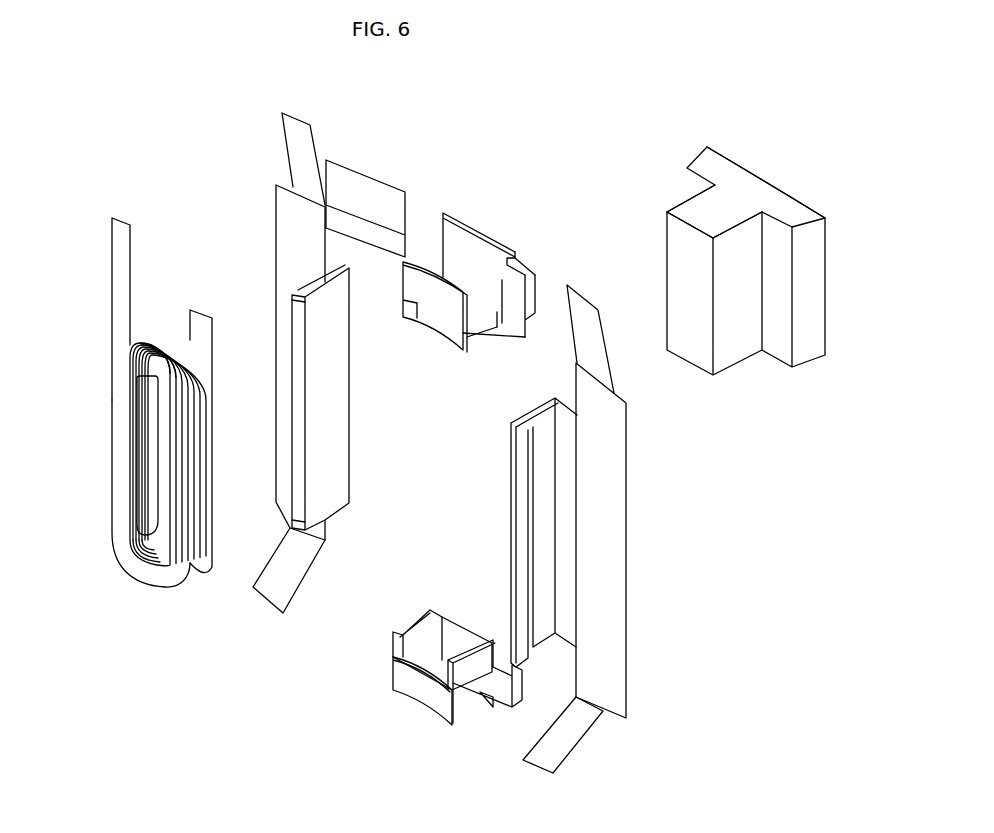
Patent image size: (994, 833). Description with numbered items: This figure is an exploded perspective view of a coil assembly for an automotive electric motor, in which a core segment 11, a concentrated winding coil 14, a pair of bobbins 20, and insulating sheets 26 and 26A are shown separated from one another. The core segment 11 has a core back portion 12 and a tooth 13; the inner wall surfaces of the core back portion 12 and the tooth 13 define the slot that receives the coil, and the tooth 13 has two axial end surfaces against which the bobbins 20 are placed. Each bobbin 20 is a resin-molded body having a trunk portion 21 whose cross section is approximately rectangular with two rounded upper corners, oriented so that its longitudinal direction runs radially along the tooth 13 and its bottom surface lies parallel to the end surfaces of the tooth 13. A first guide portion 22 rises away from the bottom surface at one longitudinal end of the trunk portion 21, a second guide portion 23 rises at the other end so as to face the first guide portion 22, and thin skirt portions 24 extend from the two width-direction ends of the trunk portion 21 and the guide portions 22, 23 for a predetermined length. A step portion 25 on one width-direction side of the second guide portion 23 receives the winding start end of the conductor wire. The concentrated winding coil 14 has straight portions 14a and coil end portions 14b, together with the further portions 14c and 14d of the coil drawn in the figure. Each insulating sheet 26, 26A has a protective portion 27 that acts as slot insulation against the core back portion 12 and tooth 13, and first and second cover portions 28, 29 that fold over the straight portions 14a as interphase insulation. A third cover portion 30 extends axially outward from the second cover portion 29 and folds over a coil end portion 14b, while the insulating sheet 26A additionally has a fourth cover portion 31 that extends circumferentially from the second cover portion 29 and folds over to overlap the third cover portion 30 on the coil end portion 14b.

The core segment 11 is at (749, 232).
The core back portion 12 is at (747, 175).
The tooth 13 is at (717, 213).
The concentrated winding coil 14 is at (128, 402).
The straight portions 14a is at (122, 422).
The coil end portions 14b is at (145, 348).
The coil rear lead 14c is at (193, 328).
The coil front lead 14d is at (113, 257).
The bobbin 20 is at (491, 271).
The trunk portion 21 is at (462, 273).
The first guide portion 22 is at (420, 258).
The second guide portion 23 is at (497, 238).
The skirt portions 24 is at (477, 333).
The step portion 25 is at (523, 262).
The insulating sheet 26 is at (603, 540).
The insulating sheet 26A is at (287, 323).
The protective portion 27 is at (335, 385).
The first cover portion 28 is at (303, 276).
The second cover portion 29 is at (285, 208).
The third cover portion 30 is at (290, 136).
The fourth cover portion 31 is at (358, 180).